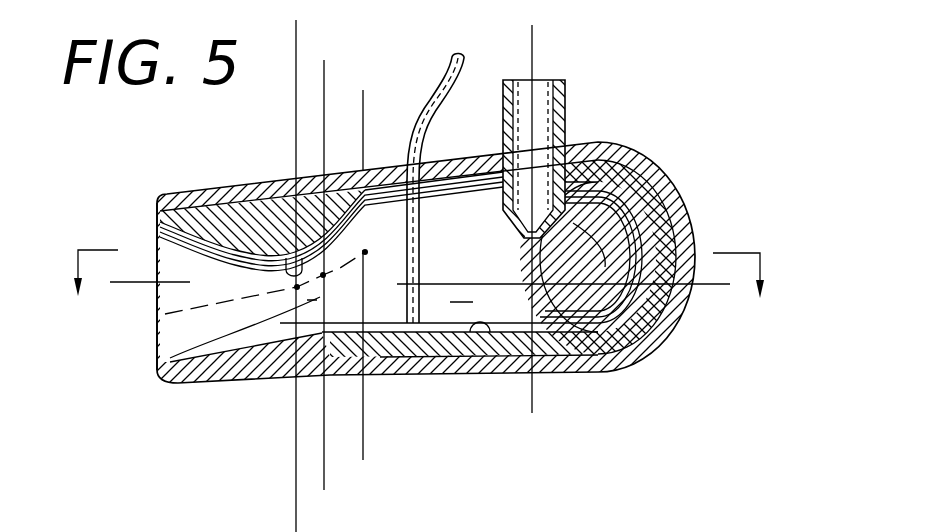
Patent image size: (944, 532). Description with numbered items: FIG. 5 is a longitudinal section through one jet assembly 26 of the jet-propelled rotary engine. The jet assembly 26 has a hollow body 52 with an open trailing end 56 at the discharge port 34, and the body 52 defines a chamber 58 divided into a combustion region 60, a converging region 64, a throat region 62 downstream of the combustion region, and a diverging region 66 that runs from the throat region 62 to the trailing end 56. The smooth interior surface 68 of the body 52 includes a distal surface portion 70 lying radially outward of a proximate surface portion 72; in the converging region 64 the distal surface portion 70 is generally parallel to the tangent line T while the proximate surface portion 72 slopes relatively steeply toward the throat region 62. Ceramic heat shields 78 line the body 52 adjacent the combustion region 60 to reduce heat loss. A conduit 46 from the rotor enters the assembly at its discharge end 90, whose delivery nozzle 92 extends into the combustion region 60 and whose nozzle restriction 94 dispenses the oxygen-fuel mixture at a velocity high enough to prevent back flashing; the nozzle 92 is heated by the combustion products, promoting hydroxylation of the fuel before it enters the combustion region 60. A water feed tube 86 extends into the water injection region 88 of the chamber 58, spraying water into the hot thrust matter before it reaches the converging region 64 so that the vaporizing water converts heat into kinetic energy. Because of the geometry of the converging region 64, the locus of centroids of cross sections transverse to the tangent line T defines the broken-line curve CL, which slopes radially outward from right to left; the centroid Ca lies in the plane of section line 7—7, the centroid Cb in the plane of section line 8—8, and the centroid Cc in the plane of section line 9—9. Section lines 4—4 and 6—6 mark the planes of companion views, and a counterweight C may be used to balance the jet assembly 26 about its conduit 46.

The jet assembly 26 is at (500, 373).
The discharge port 34 is at (157, 352).
The conduit 46 is at (574, 141).
The hollow body 52 is at (320, 362).
The open trailing end 56 is at (157, 266).
The chamber 58 is at (273, 330).
The combustion region 60 is at (624, 262).
The throat region 62 is at (249, 275).
The converging region 64 is at (356, 190).
The diverging region 66 is at (180, 275).
The interior surface 68 is at (483, 266).
The distal surface portion 70 is at (483, 320).
The proximate surface portion 72 is at (415, 153).
The heat shields 78 is at (593, 373).
The water feed tube 86 is at (444, 78).
The water injection region 88 is at (392, 305).
The discharge end 90 is at (567, 118).
The delivery nozzle 92 is at (605, 158).
The nozzle restriction 94 is at (552, 227).
The counterweight C is at (665, 205).
The tangent line T is at (127, 283).
The curve of centroids CL is at (265, 288).
The centroid Ca is at (365, 252).
The centroid Cb is at (323, 275).
The centroid Cc is at (297, 290).
The section line 4— 4 is at (538, 214).
The section line 6— 6 is at (415, 288).
The section line 7— 7 is at (390, 108).
The section line 8— 8 is at (357, 75).
The section line 9— 9 is at (325, 44).